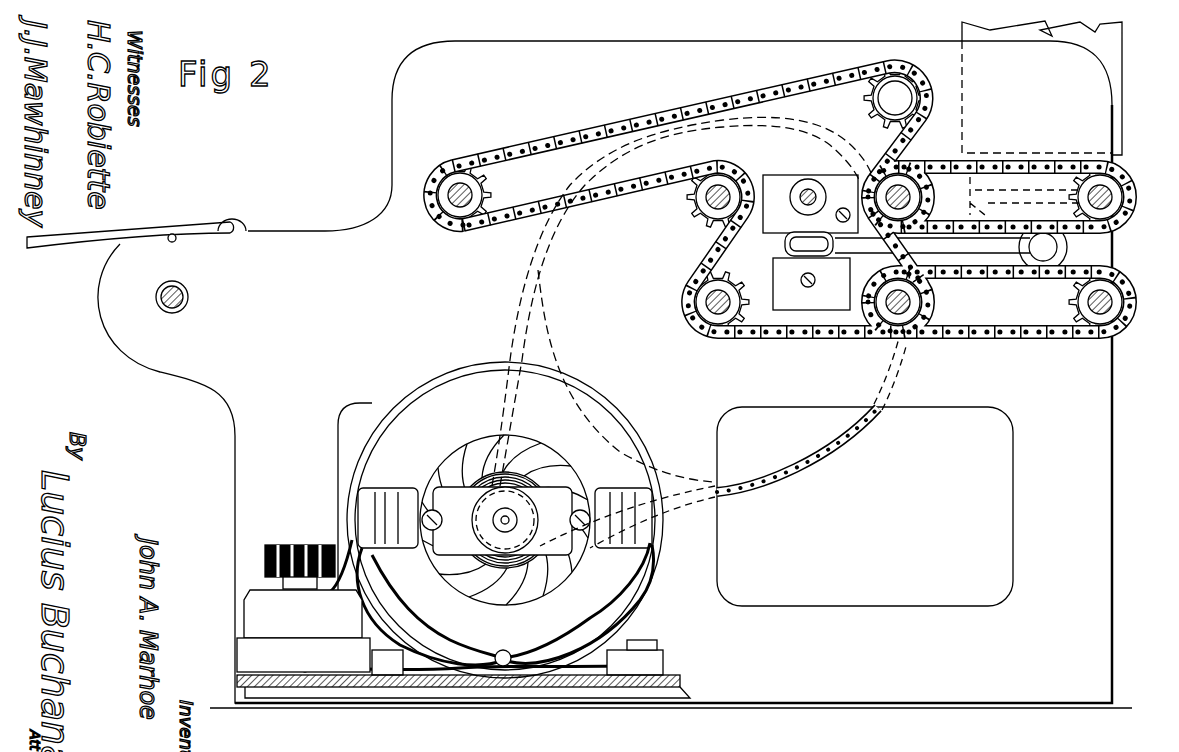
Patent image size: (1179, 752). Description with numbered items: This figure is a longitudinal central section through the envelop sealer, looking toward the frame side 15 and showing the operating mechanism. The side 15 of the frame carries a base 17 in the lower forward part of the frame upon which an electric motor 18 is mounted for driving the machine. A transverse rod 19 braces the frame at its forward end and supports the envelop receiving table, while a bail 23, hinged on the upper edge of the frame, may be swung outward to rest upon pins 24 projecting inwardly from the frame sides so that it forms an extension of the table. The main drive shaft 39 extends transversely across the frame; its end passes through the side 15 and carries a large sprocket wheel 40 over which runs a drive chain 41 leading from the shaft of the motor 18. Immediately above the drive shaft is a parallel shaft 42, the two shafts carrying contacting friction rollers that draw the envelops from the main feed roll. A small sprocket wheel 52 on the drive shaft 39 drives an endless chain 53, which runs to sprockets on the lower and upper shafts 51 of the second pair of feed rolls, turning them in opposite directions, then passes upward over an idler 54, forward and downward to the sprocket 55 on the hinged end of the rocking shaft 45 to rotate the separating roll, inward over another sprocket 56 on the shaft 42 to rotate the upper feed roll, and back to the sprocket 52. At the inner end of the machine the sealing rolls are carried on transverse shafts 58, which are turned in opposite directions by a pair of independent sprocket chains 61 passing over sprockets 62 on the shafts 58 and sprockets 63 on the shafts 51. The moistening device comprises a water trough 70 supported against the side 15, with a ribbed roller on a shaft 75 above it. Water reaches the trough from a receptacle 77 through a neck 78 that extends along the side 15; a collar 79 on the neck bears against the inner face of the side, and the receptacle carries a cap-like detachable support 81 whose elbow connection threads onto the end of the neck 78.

The frame side 15 is at (428, 290).
The base 17 is at (682, 677).
The electric motor 18 is at (450, 520).
The transverse rod 19 is at (190, 296).
The bail 23 is at (148, 232).
The pin 24 is at (178, 240).
The main drive shaft 39 is at (708, 303).
The large sprocket wheel 40 is at (547, 322).
The drive chain 41 is at (845, 463).
The parallel shaft 42 is at (735, 184).
The rocking shaft 45 is at (447, 197).
The transverse shaft 51 is at (923, 195).
The small sprocket wheel 52 is at (698, 283).
The endless chain 53 is at (579, 131).
The idler 54 is at (866, 106).
The sprocket 55 is at (480, 188).
The sprocket 56 is at (694, 204).
The transverse shaft 58 is at (1108, 190).
The sprocket chain 61 is at (1088, 266).
The sprocket 62 is at (1118, 212).
The sprocket 63 is at (922, 210).
The water trough 70 is at (784, 246).
The shaft 75 is at (808, 190).
The receptacle 77 is at (1112, 43).
The neck 78 is at (932, 243).
The collar 79 is at (1042, 272).
The detachable support 81 is at (967, 166).